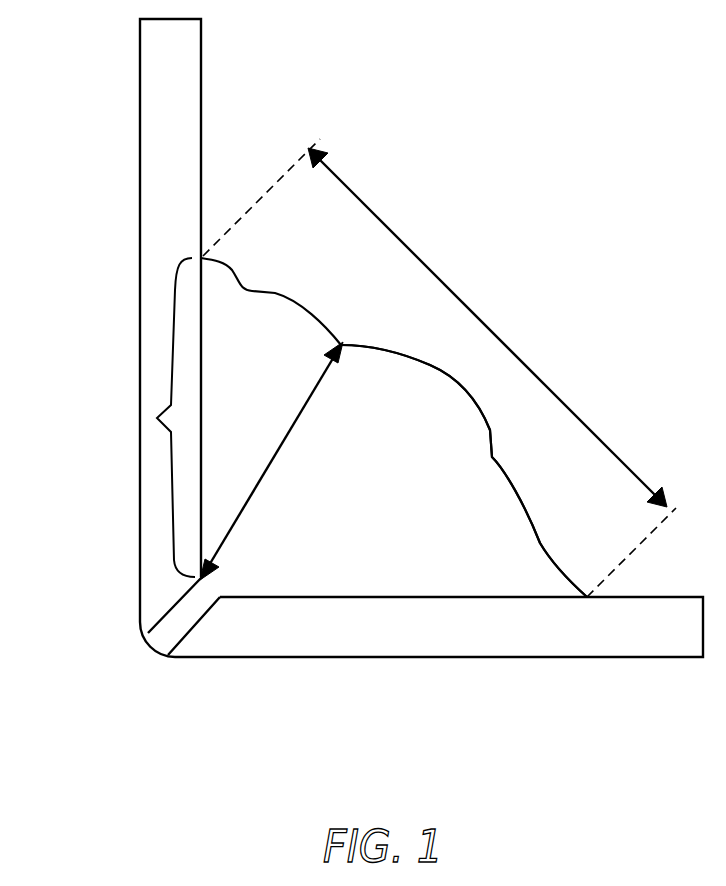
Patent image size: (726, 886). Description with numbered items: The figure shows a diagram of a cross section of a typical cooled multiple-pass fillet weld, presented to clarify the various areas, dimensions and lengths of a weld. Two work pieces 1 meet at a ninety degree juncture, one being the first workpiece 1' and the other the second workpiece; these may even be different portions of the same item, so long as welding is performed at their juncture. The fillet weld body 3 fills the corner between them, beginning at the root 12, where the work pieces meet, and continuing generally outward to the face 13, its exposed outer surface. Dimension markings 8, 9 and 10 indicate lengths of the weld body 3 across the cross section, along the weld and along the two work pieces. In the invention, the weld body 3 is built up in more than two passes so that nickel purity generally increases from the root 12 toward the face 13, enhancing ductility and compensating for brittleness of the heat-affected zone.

The work pieces 1 is at (421, 676).
The first workpiece 1' is at (124, 320).
The fillet weld body 3 is at (395, 497).
The width of filler 8 is at (478, 318).
The thickness direction of filler 9 is at (277, 453).
The height of filler 10 is at (156, 418).
The root 12 is at (162, 636).
The face 13 is at (492, 457).